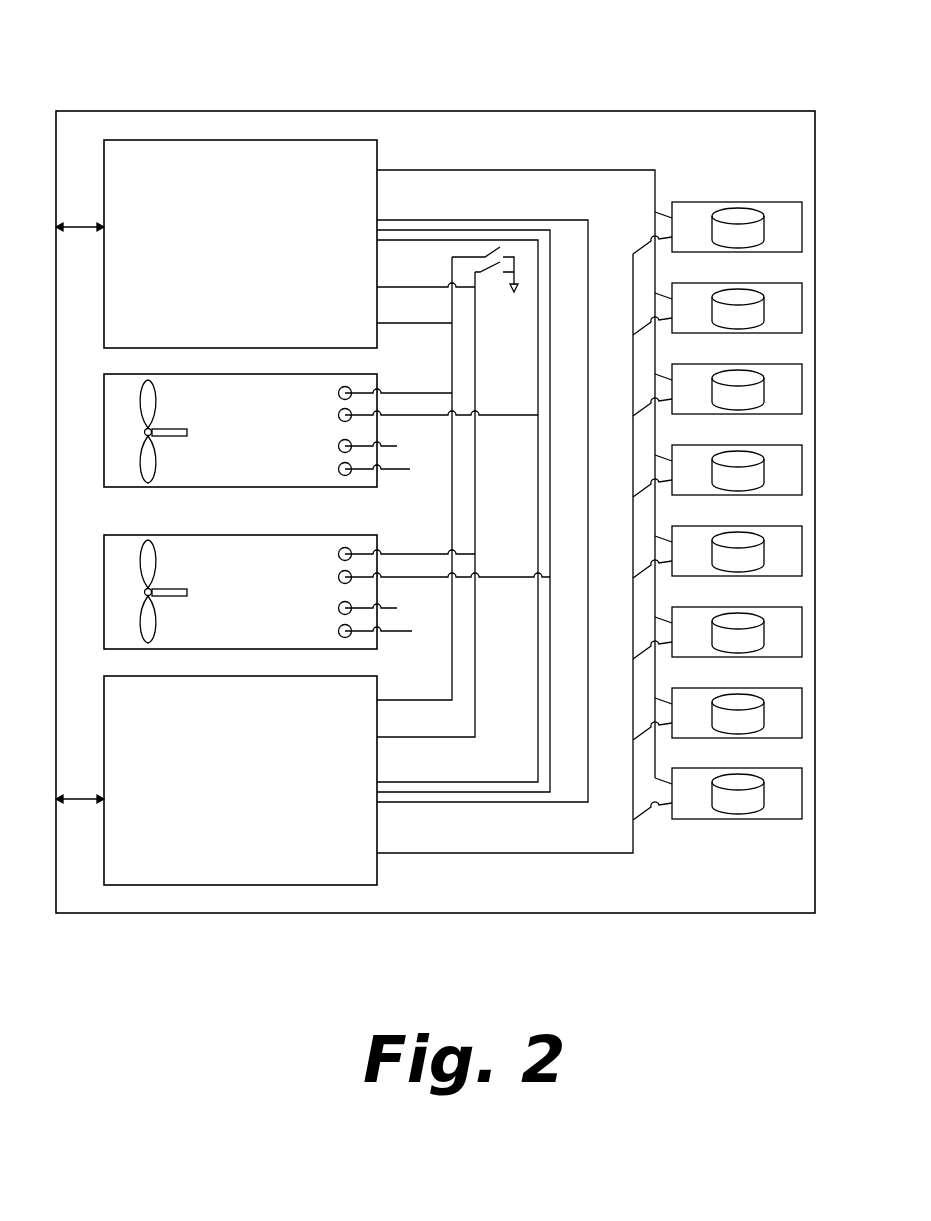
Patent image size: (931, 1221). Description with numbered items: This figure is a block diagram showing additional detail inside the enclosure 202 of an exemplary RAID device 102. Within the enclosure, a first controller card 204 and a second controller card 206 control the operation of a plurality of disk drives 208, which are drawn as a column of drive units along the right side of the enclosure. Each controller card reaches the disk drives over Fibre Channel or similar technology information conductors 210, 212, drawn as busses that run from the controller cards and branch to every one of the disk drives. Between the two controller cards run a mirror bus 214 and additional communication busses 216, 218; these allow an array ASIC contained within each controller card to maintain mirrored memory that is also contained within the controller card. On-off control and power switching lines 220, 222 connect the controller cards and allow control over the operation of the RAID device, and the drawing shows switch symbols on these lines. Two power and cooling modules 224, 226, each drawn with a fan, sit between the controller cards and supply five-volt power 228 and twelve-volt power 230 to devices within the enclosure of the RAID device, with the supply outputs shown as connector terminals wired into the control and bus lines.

The RAID device 102 is at (350, 57).
The enclosure 202 is at (475, 111).
The first controller card 204 is at (240, 244).
The second controller card 206 is at (240, 780).
The disk drives 208 is at (737, 212).
The information conductor 210 is at (467, 170).
The information conductor 212 is at (572, 853).
The mirror bus 214 is at (547, 219).
The communication bus 216 is at (550, 692).
The communication bus 218 is at (538, 752).
The on-off control and power switching line 220 is at (452, 345).
The on-off control and power switching line 222 is at (478, 503).
The power and cooling module 224 is at (377, 489).
The power and cooling module 226 is at (377, 651).
The 5-volts 228 is at (339, 445).
The 12-volts 230 is at (339, 630).